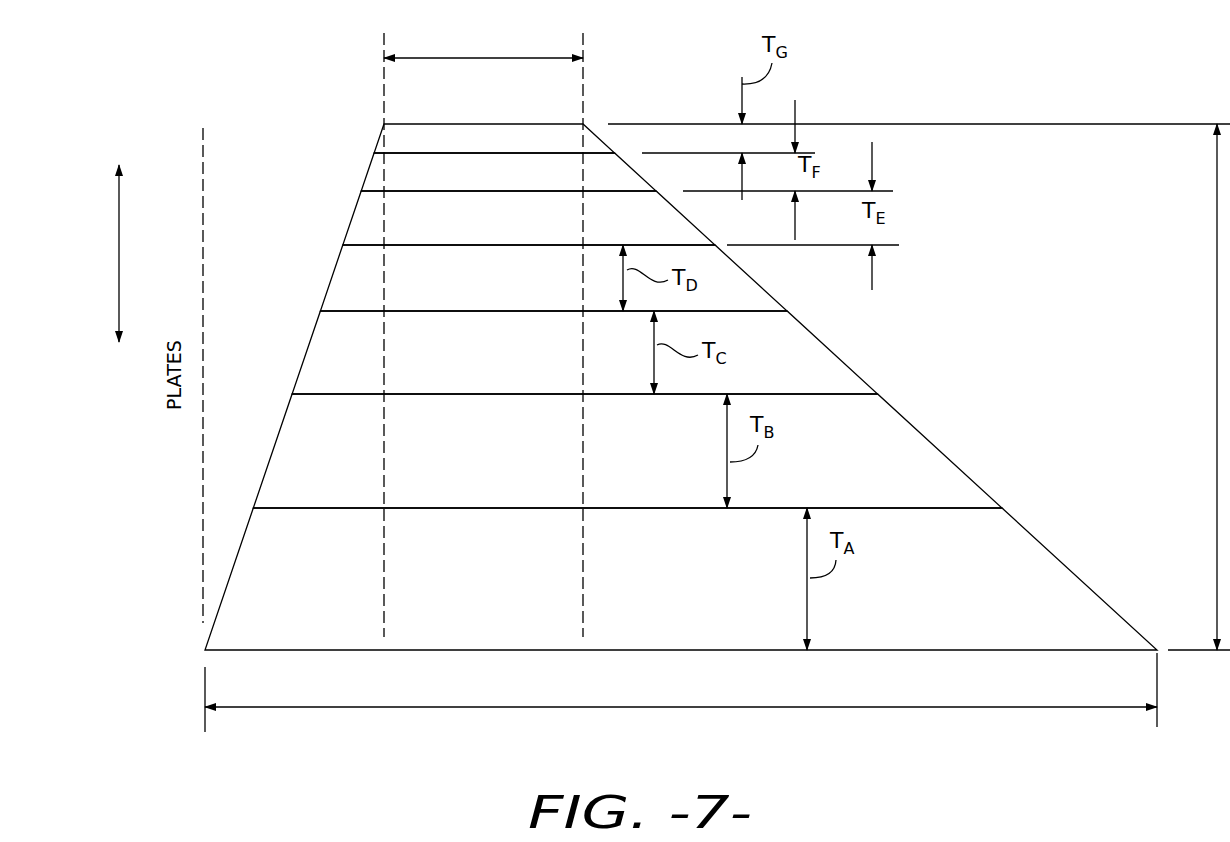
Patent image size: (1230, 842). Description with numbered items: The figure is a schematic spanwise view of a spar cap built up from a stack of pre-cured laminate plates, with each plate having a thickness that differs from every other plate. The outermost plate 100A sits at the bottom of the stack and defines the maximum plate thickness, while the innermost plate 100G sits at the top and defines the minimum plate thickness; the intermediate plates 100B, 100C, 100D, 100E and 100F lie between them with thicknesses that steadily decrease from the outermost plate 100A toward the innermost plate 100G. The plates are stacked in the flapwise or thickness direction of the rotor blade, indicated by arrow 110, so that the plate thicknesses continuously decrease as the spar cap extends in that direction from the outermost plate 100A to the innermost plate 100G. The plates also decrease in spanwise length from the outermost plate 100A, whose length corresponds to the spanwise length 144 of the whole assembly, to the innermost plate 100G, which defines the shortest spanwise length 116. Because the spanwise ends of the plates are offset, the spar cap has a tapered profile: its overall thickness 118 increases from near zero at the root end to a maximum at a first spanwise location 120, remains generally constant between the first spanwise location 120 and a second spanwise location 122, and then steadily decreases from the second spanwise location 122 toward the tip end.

The thickness direction arrow 110 is at (119, 262).
The shortest spanwise length 116 is at (457, 56).
The overall thickness 118 is at (1217, 393).
The first spanwise location 120 is at (383, 92).
The second spanwise location 122 is at (585, 92).
The spanwise length 144 is at (895, 708).
The outermost plate 100A is at (514, 590).
The intermediate plate 100B is at (514, 465).
The intermediate plate 100C is at (514, 365).
The intermediate plate 100D is at (514, 292).
The intermediate plate 100E is at (513, 230).
The intermediate plate 100F is at (513, 184).
The innermost plate 100G is at (472, 142).